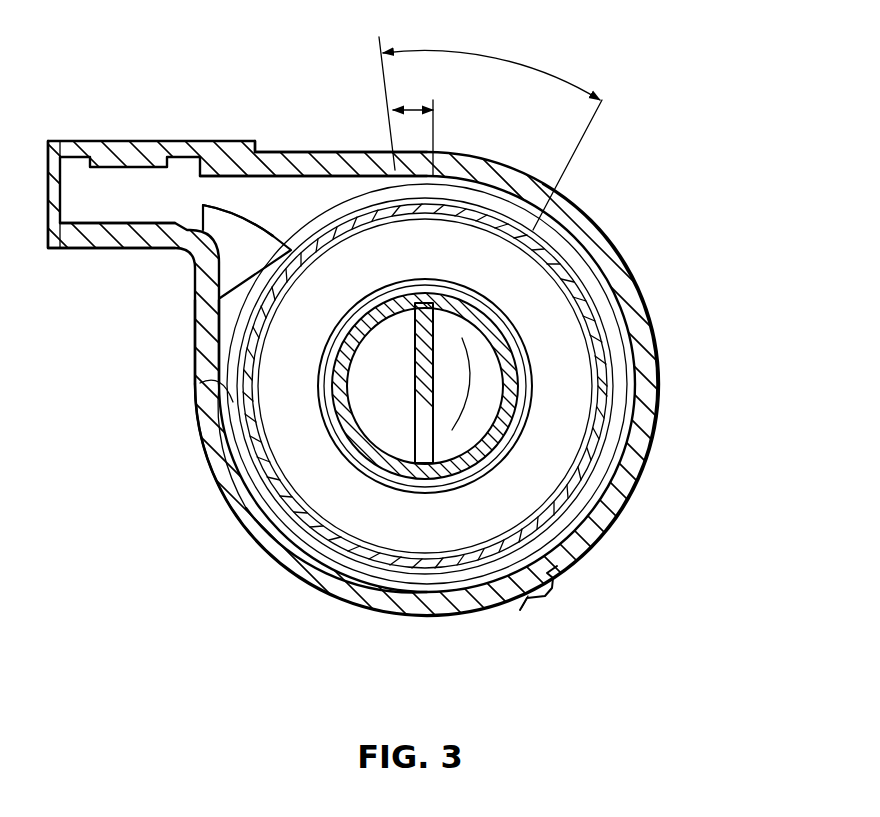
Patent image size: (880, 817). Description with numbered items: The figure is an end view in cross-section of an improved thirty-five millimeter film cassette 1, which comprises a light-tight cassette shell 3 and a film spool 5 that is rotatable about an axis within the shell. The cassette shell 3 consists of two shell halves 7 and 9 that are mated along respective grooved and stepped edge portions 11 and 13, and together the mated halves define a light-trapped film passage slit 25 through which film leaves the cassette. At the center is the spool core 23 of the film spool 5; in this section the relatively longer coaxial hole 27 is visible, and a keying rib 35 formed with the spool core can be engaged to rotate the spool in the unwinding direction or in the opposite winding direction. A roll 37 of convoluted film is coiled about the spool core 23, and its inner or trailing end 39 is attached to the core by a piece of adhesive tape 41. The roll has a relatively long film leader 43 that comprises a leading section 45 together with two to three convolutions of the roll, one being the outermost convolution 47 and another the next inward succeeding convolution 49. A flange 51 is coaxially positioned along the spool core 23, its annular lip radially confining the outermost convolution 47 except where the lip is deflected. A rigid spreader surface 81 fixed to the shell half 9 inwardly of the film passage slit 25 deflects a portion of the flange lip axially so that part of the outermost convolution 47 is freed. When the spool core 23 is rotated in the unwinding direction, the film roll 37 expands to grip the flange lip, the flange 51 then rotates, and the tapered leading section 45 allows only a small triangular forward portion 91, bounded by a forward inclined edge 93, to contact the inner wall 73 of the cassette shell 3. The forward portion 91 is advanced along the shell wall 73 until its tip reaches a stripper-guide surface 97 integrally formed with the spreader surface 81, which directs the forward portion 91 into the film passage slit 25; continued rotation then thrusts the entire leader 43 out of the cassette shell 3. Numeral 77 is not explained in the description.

The film cassette 1 is at (250, 128).
The cassette shell 3 is at (607, 538).
The film spool 5 is at (622, 412).
The shell half 7 is at (300, 150).
The shell half 9 is at (392, 622).
The grooved and stepped edge portion 11 is at (523, 606).
The grooved and stepped edge portion 13 is at (553, 540).
The spool core 23 is at (453, 300).
The film passage slit 25 is at (108, 197).
The longer coaxial hole 27 is at (488, 350).
The keying rib 35 is at (423, 338).
The film roll 37 is at (258, 538).
The inner end 39 is at (323, 417).
The adhesive tape 41 is at (320, 392).
The film leader 43 is at (582, 218).
The leading section 45 is at (503, 68).
The outermost convolution 47 is at (602, 323).
The next inward succeeding convolution 49 is at (583, 283).
The flange 51 is at (281, 570).
The inner wall 73 is at (261, 485).
The side wall 77 is at (197, 398).
The spreader surface 81 is at (253, 253).
The forward portion 91 is at (408, 110).
The forward inclined edge 93 is at (363, 177).
The stripper-guide surface 97 is at (240, 222).